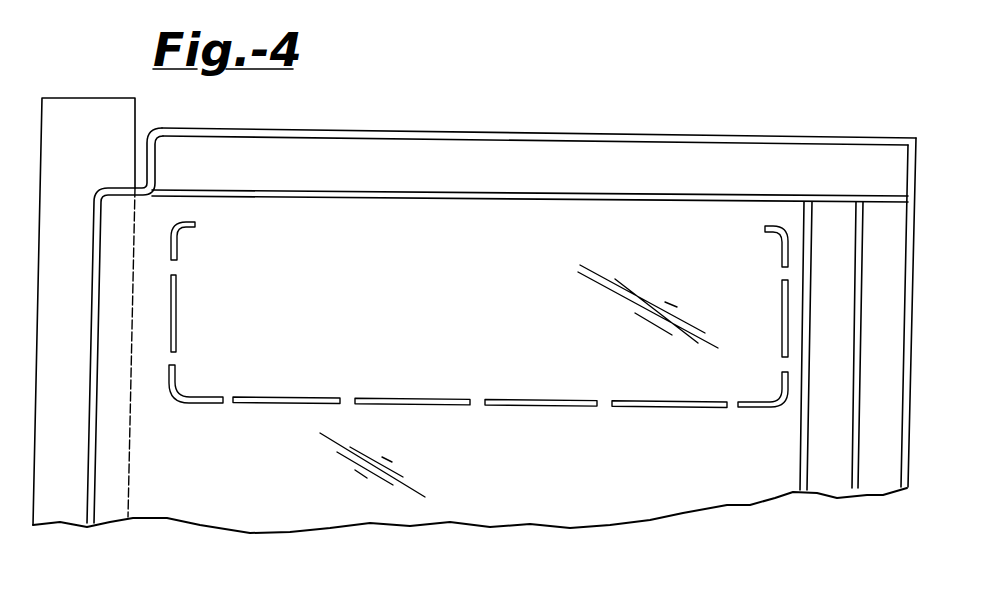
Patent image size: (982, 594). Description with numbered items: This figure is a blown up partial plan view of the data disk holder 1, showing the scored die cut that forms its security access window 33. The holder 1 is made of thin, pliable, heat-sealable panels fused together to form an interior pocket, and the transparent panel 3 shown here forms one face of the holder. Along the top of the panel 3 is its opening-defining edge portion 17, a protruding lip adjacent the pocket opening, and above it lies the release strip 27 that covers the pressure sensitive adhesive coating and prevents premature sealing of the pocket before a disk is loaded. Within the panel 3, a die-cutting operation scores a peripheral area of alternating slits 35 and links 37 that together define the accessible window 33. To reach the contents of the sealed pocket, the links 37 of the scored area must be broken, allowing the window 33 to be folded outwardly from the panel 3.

The data disk holder 1 is at (532, 126).
The panel 3 is at (499, 470).
The opening-defining edge portion 17 is at (120, 208).
The release strip 27 is at (62, 117).
The security access window 33 is at (515, 299).
The slits 35 is at (175, 315).
The links 37 is at (348, 397).